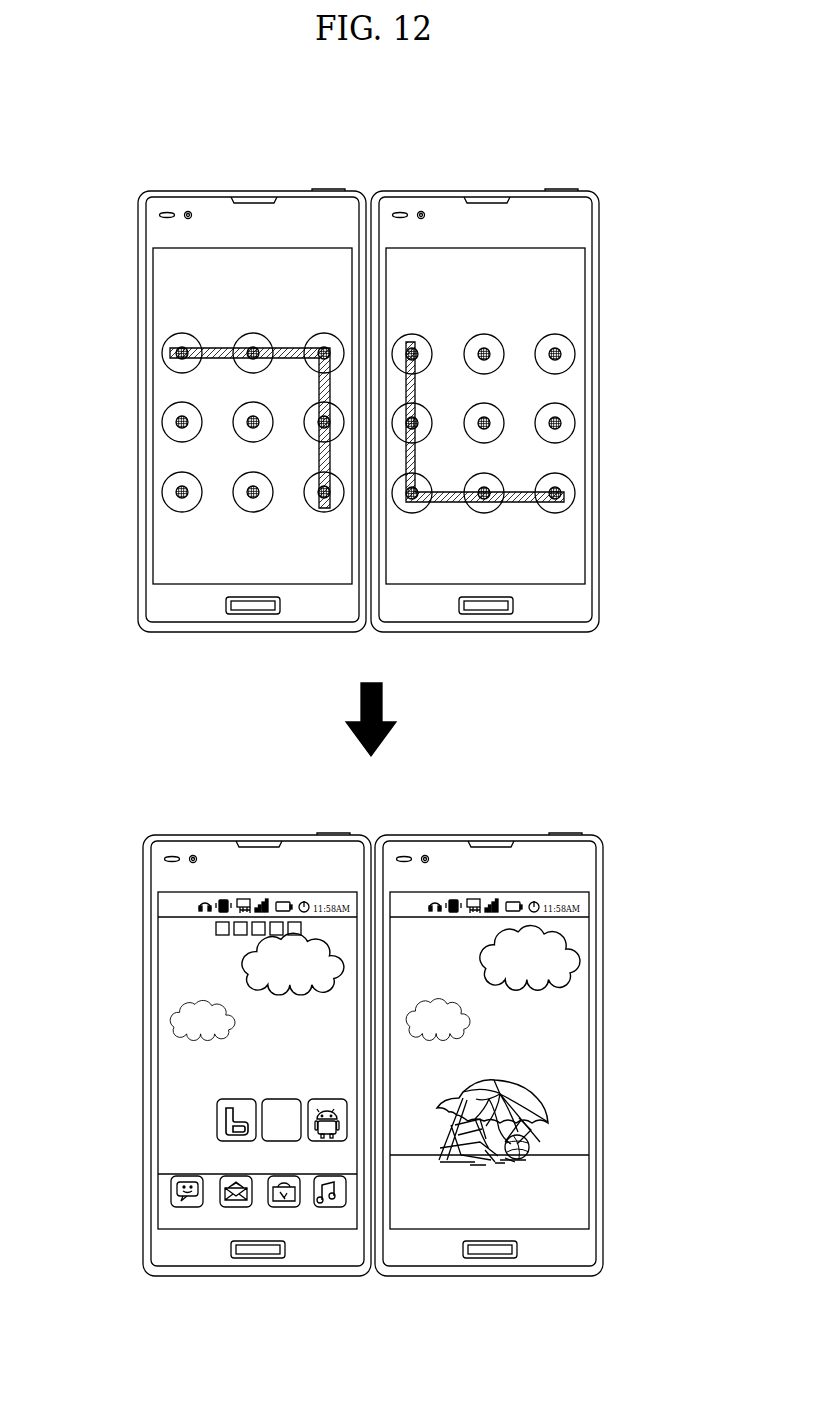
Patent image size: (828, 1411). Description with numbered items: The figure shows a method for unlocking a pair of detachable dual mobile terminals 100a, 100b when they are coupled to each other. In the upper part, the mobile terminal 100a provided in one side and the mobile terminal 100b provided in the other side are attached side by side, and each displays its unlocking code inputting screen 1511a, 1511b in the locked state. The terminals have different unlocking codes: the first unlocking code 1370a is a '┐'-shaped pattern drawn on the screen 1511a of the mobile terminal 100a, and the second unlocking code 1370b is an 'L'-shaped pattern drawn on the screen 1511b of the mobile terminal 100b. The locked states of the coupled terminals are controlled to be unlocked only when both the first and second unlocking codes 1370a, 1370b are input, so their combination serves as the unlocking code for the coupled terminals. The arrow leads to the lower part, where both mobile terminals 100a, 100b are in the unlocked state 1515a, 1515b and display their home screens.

The mobile terminal 100a is at (252, 190).
The mobile terminal 100b is at (485, 190).
The screen 1511a is at (165, 292).
The screen 1511b is at (575, 317).
The first unlocking code 1370a is at (180, 355).
The second unlocking code 1370b is at (564, 496).
The unlocked state 1515a is at (169, 972).
The unlocked state 1515b is at (582, 968).